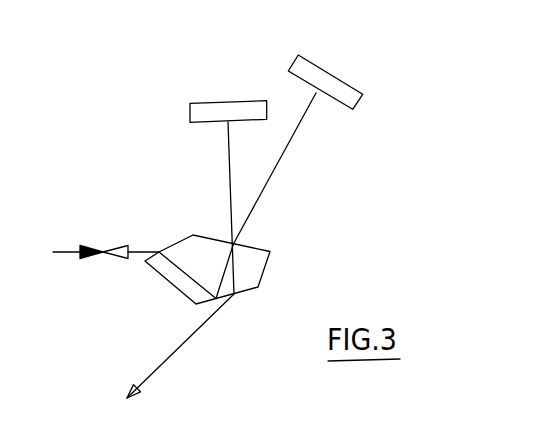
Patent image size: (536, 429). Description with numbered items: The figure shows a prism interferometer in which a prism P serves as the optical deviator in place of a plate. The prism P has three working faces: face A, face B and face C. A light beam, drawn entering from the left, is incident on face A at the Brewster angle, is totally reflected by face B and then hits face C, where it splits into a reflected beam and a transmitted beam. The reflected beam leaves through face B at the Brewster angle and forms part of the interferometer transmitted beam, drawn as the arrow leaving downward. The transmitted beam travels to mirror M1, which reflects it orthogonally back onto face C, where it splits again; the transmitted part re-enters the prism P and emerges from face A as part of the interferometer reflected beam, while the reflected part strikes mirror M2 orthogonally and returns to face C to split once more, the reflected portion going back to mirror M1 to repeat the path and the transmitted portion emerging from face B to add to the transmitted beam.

The face A of prism A is at (109, 240).
The face B of prism B is at (188, 346).
The face C of prism C is at (266, 196).
The prism P is at (209, 273).
The mirror M1 is at (338, 94).
The mirror M2 is at (209, 197).